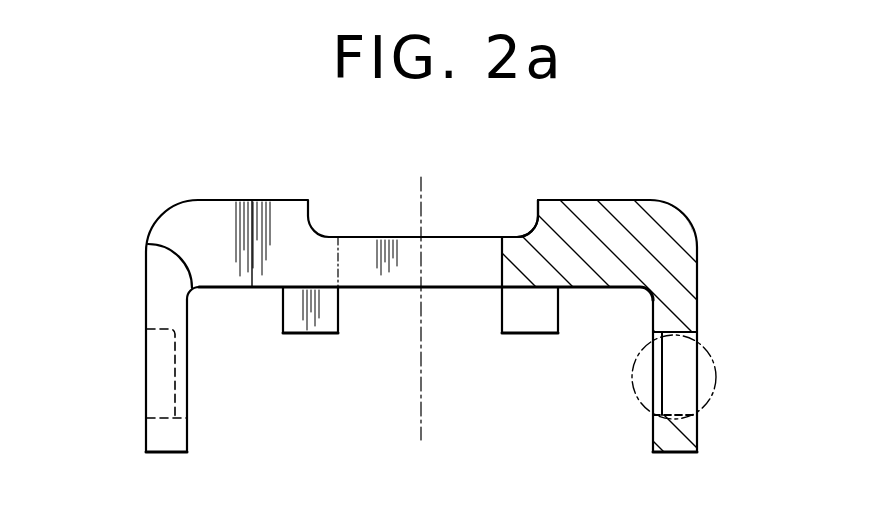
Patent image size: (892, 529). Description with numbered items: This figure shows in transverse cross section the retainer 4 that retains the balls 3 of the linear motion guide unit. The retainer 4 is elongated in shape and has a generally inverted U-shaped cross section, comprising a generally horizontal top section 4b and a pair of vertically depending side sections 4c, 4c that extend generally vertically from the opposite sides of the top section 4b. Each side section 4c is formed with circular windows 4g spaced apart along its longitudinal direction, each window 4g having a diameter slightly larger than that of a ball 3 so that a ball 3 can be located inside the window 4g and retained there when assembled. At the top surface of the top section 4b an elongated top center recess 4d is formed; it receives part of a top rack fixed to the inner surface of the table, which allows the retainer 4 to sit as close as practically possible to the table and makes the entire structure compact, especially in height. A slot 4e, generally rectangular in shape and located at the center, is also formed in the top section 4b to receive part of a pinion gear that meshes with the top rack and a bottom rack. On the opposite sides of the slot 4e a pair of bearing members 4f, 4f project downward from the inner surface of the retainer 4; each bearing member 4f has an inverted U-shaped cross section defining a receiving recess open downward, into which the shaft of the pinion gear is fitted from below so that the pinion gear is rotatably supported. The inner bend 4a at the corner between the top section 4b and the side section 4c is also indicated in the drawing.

The ball 3 is at (706, 388).
The retainer 4 is at (665, 250).
The bend portion 4a is at (154, 243).
The top section 4b is at (215, 199).
The side section 4c is at (162, 310).
The top center recess 4d is at (537, 222).
The slot 4e is at (503, 257).
The bearing member 4f is at (311, 335).
The window 4g is at (684, 413).